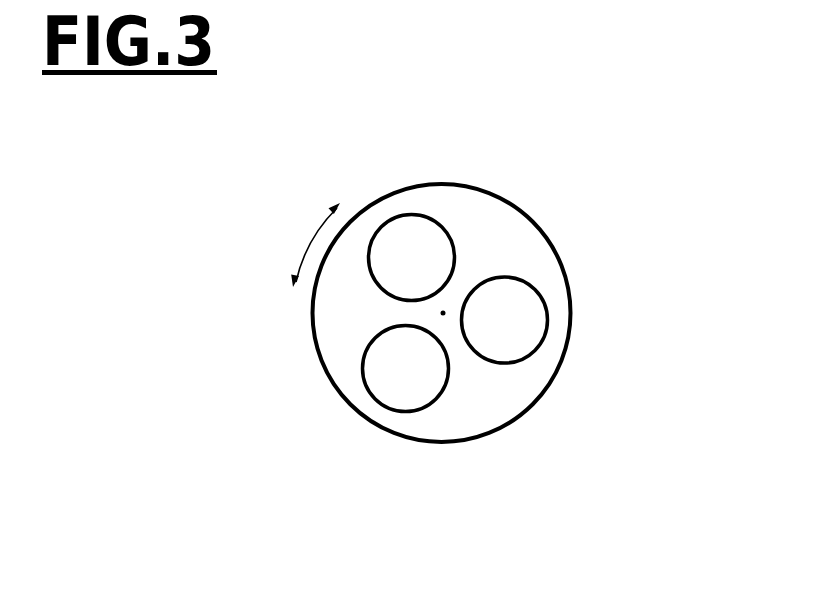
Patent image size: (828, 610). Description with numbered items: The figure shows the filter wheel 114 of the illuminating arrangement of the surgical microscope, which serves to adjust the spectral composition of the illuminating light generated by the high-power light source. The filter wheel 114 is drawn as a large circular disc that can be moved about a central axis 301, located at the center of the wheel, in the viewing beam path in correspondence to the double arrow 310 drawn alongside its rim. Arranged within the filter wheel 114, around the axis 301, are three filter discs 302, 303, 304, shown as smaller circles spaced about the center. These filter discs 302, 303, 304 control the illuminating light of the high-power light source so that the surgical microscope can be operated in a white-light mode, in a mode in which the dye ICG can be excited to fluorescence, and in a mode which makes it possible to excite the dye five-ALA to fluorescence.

The filter wheel 114 is at (606, 226).
The axis 301 is at (443, 313).
The filter disc 302 is at (537, 325).
The filter disc 303 is at (403, 400).
The filter disc 304 is at (413, 230).
The double arrow 310 is at (310, 237).